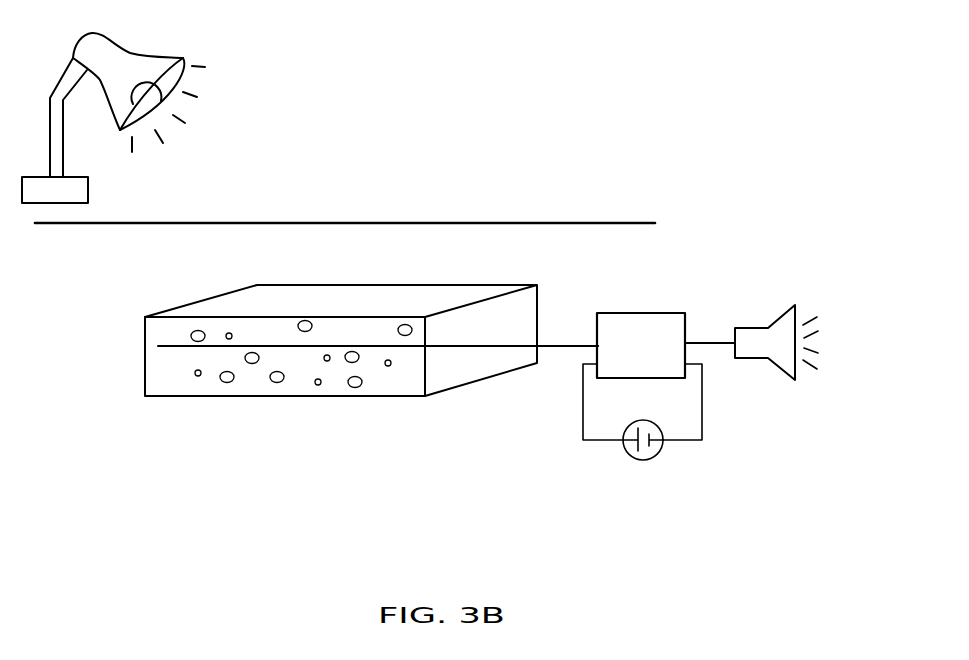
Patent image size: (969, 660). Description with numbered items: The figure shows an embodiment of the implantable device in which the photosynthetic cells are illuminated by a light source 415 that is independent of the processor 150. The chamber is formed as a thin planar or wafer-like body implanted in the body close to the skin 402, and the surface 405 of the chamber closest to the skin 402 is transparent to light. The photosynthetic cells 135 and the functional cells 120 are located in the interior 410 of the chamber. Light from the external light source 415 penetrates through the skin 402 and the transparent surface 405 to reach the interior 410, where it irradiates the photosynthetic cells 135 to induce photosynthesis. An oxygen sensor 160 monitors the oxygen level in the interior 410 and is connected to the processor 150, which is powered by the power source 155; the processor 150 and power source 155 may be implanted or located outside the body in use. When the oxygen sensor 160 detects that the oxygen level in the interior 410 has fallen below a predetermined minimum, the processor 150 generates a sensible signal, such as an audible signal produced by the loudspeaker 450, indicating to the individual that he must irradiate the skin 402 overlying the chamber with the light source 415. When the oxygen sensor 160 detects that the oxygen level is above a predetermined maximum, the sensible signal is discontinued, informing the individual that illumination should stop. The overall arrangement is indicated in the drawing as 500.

The light source 415 is at (113, 108).
The skin 402 is at (568, 222).
The surface 405 is at (245, 302).
The interior 410 is at (178, 382).
The functional cells 120 is at (277, 383).
The photosynthetic cells 135 is at (389, 366).
The oxygen sensor 160 is at (577, 346).
The processor 150 is at (660, 285).
The power source 155 is at (642, 460).
The loudspeaker 450 is at (780, 370).
The detection system 500 is at (165, 514).